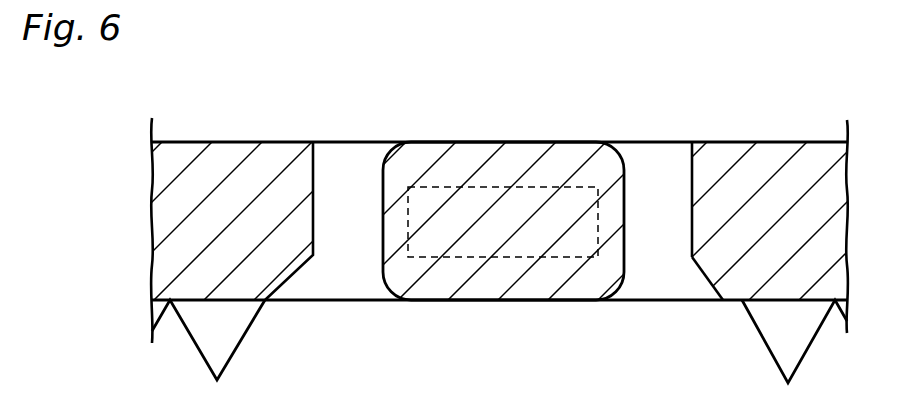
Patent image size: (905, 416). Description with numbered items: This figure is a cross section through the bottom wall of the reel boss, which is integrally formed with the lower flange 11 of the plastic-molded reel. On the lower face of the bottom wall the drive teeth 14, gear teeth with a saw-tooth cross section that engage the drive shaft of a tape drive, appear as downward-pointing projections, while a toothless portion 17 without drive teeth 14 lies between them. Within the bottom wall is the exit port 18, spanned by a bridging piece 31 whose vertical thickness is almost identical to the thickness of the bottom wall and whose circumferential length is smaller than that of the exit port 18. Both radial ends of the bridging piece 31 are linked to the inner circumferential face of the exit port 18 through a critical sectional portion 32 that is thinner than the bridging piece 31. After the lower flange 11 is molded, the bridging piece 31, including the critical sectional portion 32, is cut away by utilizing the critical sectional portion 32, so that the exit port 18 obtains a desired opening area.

The lower flange 11 is at (226, 142).
The drive teeth 14 is at (233, 325).
The toothless portion 17 is at (352, 302).
The exit port 18 is at (663, 167).
The bridging piece 31 is at (527, 163).
The critical sectional portion 32 is at (462, 187).